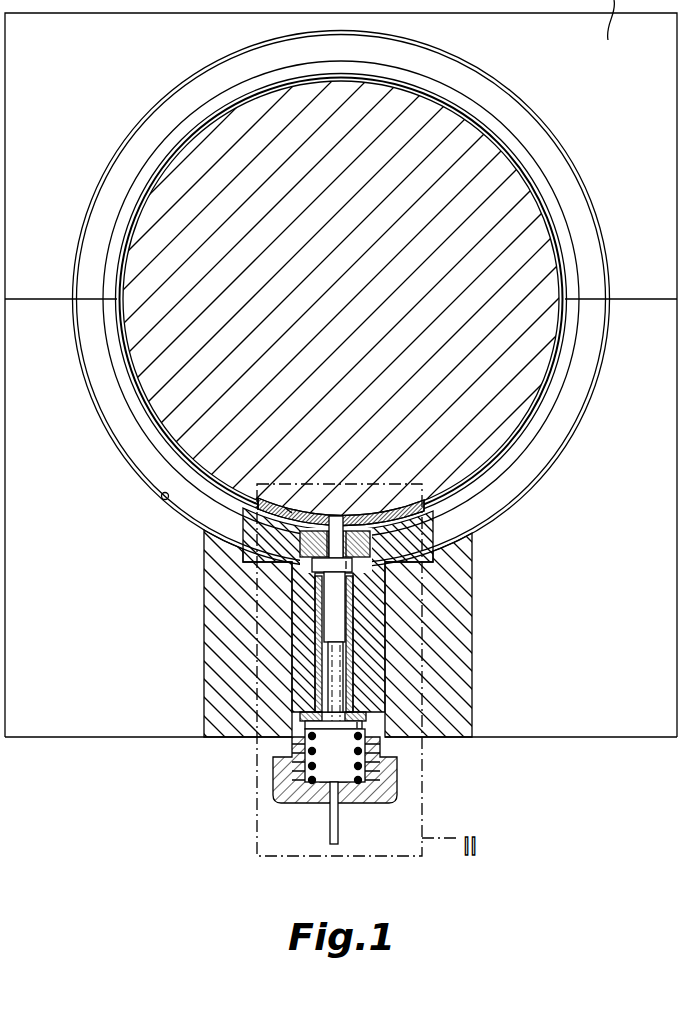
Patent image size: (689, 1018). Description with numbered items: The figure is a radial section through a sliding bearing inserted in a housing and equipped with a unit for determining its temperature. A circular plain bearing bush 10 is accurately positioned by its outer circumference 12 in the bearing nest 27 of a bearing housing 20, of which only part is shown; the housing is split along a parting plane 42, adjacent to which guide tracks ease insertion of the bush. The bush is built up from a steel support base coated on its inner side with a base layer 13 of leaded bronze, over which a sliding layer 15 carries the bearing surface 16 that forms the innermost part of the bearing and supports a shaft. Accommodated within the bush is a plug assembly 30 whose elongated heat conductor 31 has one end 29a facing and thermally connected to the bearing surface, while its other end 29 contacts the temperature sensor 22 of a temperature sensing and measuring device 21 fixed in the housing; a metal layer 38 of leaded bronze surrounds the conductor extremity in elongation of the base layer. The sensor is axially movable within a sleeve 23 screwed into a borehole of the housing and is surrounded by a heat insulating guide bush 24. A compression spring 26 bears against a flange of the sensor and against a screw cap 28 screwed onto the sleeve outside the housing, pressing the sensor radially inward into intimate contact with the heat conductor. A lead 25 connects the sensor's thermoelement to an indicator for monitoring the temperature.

The plain bearing bush 10 is at (573, 436).
The outer circumference 12 is at (527, 495).
The base layer 13 is at (398, 511).
The sliding layer 15 is at (254, 510).
The bearing surface 16 is at (288, 512).
The bearing housing 20 is at (95, 738).
The temperature sensing and measuring device 21 is at (292, 677).
The temperature sensor 22 is at (337, 617).
The sleeve 23 is at (366, 686).
The heat insulating guide bush 24 is at (352, 660).
The lead 25 is at (339, 833).
The compression spring 26 is at (380, 747).
The bearing nest 27 is at (165, 500).
The screw cap 28 is at (275, 797).
The inward end 29 is at (354, 572).
The end of heat conductor 29a is at (337, 515).
The plug assembly 30 is at (300, 551).
The heat conductor 31 is at (327, 529).
The metal layer 38 is at (347, 530).
The parting plane 42 is at (95, 296).